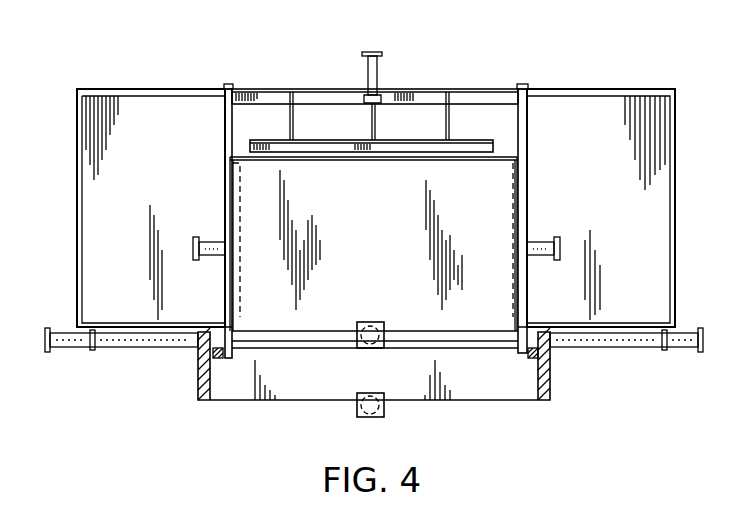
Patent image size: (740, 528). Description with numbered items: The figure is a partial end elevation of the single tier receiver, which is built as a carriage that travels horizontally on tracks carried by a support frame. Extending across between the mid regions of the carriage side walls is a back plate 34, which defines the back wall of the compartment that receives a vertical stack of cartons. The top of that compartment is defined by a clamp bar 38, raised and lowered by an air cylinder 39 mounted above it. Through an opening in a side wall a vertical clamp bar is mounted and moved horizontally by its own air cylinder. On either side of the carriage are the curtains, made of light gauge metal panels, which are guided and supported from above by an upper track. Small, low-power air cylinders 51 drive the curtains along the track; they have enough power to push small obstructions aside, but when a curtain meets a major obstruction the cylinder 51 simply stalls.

The back plate 34 is at (364, 252).
The clamp bar 38 is at (440, 140).
The air cylinder 39 is at (380, 59).
The air cylinders 51 is at (604, 346).